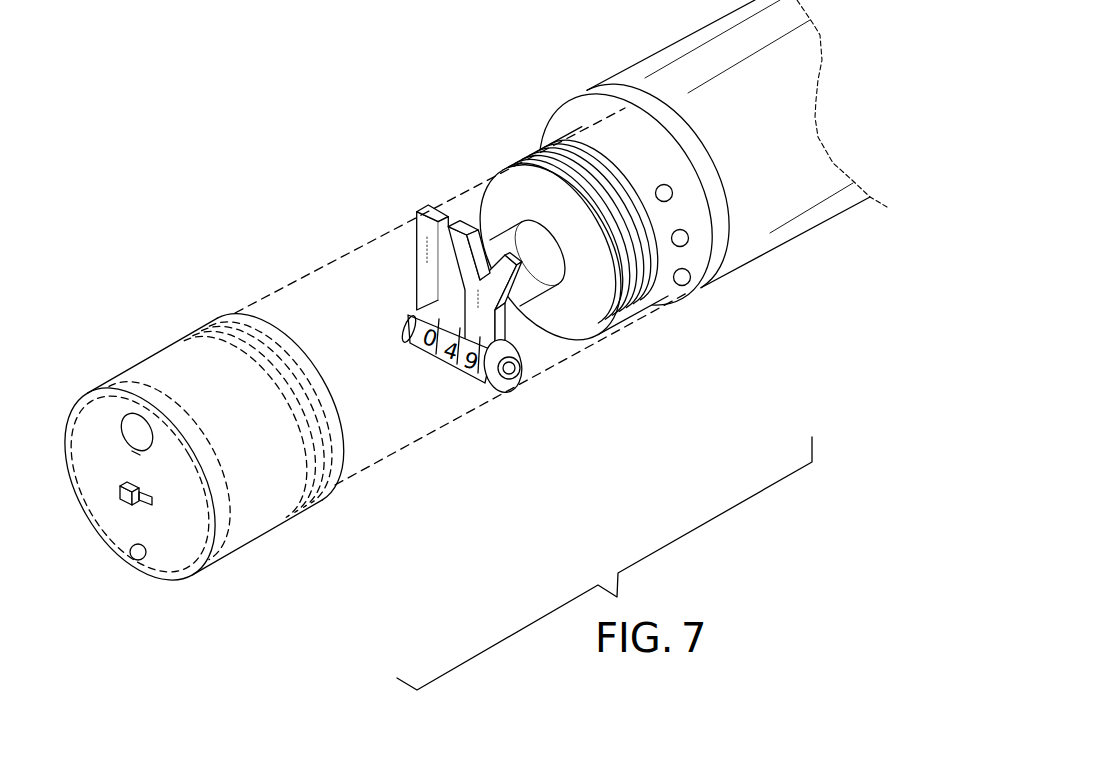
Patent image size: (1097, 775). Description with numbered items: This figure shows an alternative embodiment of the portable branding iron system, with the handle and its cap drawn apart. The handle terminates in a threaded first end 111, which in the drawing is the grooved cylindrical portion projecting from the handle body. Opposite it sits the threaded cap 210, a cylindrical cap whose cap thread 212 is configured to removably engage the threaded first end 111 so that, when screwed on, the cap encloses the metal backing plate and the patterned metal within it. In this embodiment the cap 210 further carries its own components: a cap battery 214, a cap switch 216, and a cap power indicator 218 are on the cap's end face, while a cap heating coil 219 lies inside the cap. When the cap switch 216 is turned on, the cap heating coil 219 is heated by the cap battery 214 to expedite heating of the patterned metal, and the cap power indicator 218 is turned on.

The threaded first end 111 is at (553, 167).
The threaded cap 210 is at (218, 410).
The cap thread 212 is at (276, 357).
The cap battery 214 is at (130, 428).
The cap switch 216 is at (123, 498).
The cap power indicator 218 is at (141, 560).
The cap heating coil 219 is at (233, 477).